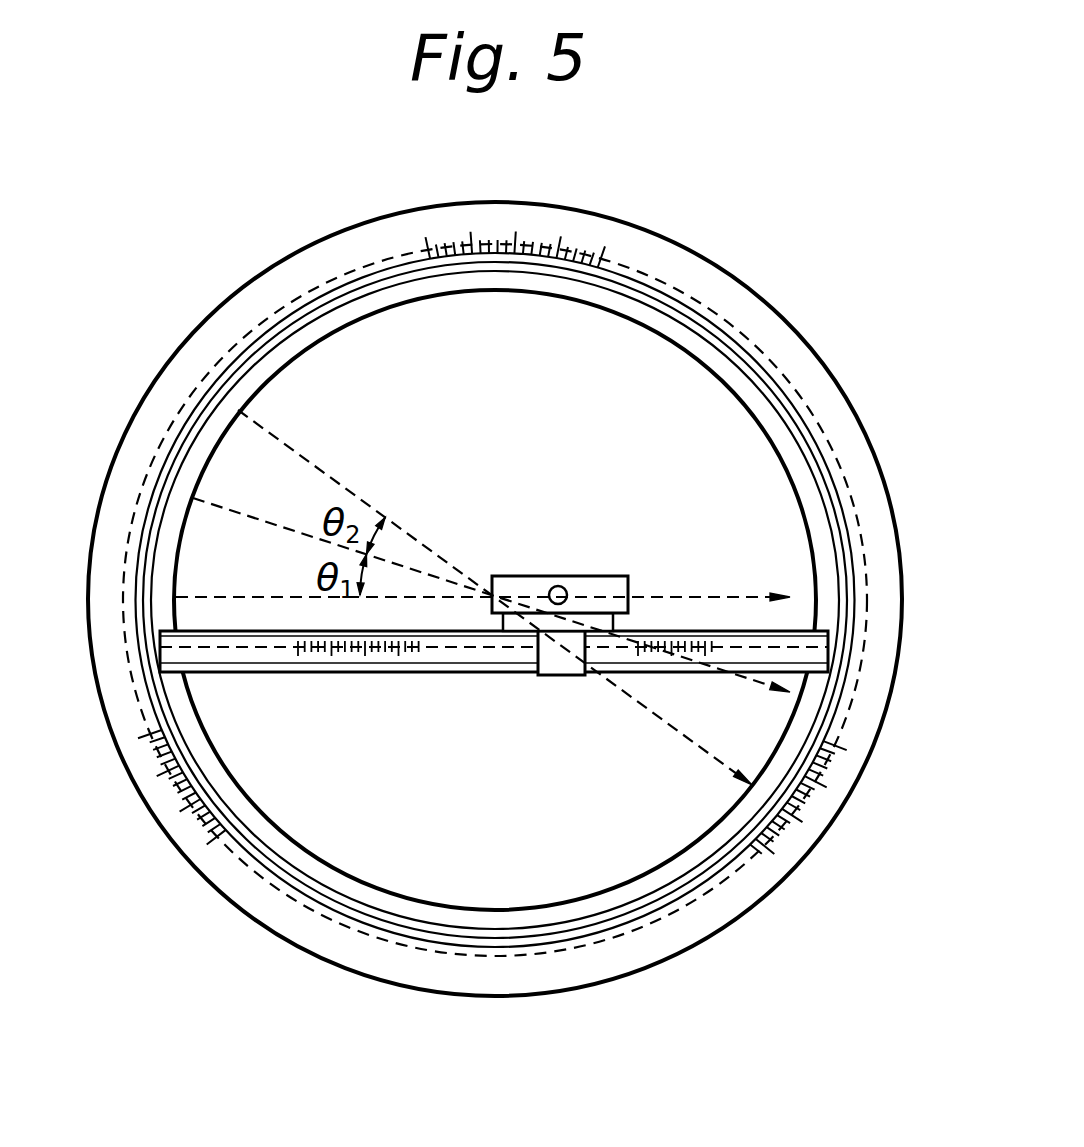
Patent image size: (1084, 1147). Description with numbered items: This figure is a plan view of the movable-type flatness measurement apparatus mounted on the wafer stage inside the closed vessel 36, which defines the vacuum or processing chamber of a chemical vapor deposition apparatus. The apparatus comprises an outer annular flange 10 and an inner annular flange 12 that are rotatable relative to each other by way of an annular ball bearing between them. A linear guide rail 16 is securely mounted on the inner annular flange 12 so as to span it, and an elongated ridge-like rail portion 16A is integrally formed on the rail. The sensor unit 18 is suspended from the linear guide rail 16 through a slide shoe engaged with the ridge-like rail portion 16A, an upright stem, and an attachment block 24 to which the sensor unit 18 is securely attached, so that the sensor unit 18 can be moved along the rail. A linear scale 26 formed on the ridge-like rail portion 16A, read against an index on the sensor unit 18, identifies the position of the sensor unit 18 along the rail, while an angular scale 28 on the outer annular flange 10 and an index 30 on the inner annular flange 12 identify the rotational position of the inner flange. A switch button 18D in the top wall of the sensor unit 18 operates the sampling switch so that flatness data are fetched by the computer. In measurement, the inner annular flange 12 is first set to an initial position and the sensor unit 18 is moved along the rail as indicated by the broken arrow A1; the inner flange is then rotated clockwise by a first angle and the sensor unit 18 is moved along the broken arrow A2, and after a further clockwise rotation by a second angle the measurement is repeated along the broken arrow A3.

The outer annular flange 10 is at (893, 492).
The inner annular flange 12 is at (360, 863).
The linear guide rail 16 is at (494, 705).
The ridge-like rail portion 16A is at (517, 657).
The sensor unit 18 is at (601, 562).
The switch button 18D is at (556, 586).
The attachment block 24 is at (570, 662).
The linear scale 26 is at (347, 668).
The angular scale 28 is at (162, 804).
The index 30 is at (158, 597).
The closed vessel 36 is at (552, 522).
The broken arrow A1 is at (680, 590).
The broken arrow A2 is at (415, 568).
The broken arrow A3 is at (668, 708).